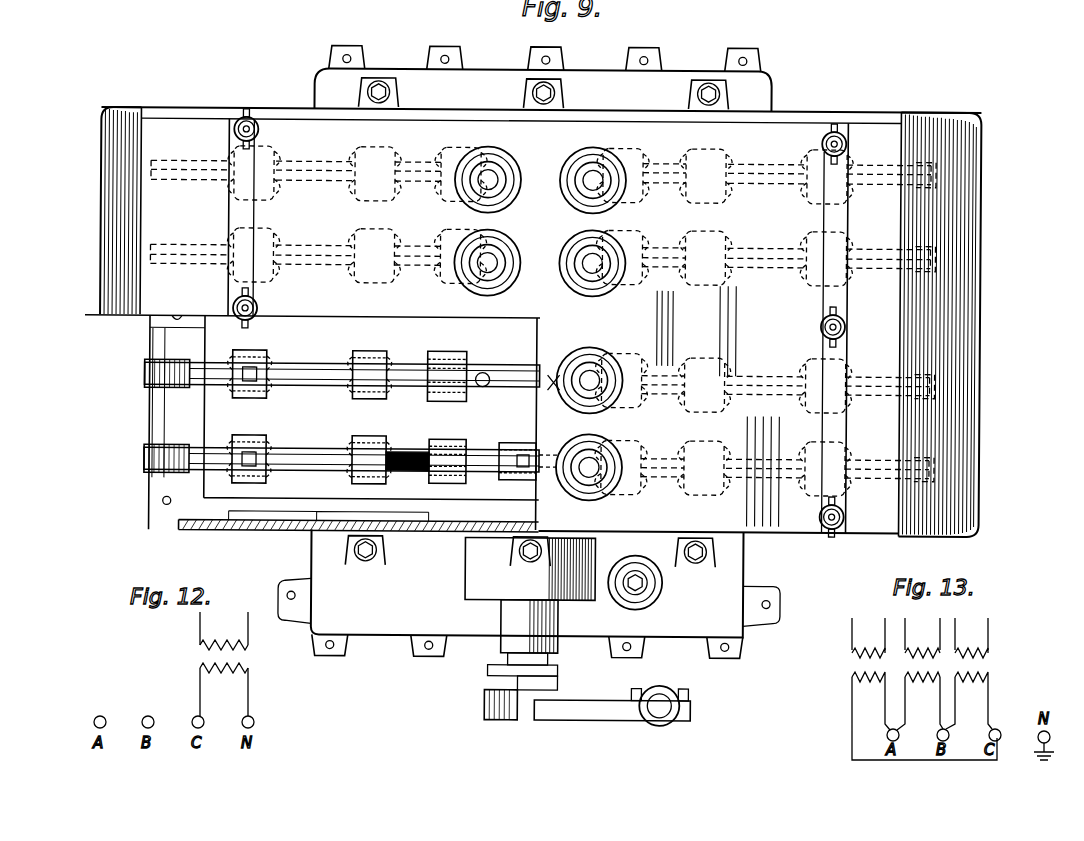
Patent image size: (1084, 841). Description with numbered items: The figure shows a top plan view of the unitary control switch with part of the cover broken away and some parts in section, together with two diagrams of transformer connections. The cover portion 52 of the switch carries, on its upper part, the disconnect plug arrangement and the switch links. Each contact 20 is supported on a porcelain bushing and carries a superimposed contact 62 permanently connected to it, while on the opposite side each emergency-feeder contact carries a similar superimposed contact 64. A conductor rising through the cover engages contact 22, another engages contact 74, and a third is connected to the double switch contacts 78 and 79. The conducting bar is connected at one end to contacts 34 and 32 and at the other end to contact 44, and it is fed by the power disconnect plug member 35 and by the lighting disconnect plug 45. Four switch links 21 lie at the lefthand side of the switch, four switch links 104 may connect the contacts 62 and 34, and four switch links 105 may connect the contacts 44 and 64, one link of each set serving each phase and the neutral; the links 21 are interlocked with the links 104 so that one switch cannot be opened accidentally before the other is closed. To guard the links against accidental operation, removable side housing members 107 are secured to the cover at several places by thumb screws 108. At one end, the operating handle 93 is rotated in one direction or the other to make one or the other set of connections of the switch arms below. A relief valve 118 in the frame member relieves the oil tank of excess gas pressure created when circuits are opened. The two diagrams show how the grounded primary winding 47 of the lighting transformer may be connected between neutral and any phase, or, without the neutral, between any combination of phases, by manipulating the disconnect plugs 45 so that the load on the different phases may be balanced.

In FIG. 9, the side housing member 107 is at (106, 199).
In FIG. 9, the thumb screw 108 is at (258, 134).
In FIG. 9, the switch link 105 is at (888, 190).
In FIG. 9, the superimposed contact 62 is at (268, 196).
In FIG. 9, the contact 22 is at (372, 196).
In FIG. 9, the contact 34 is at (444, 196).
In FIG. 9, the power disconnect plug member 35 is at (475, 240).
In FIG. 9, the lighting disconnect plug 45 is at (606, 240).
In FIG. 9, the contact 44 is at (636, 198).
In FIG. 9, the contact 74 is at (716, 200).
In FIG. 9, the superimposed contact 64 is at (810, 198).
In FIG. 9, the cover portion 52 is at (662, 345).
In FIG. 9, the contact 20 is at (266, 470).
In FIG. 9, the switch link 104 is at (308, 368).
In FIG. 9, the switch link 21 is at (302, 452).
In FIG. 9, the contact 32 is at (448, 442).
In FIG. 9, the double switch contact 78 is at (512, 442).
In FIG. 9, the double switch contact 79 is at (560, 400).
In FIG. 9, the relief valve 118 is at (650, 598).
In FIG. 9, the operating handle 93 is at (600, 716).
In FIG. 12, the primary winding 47 is at (227, 673).